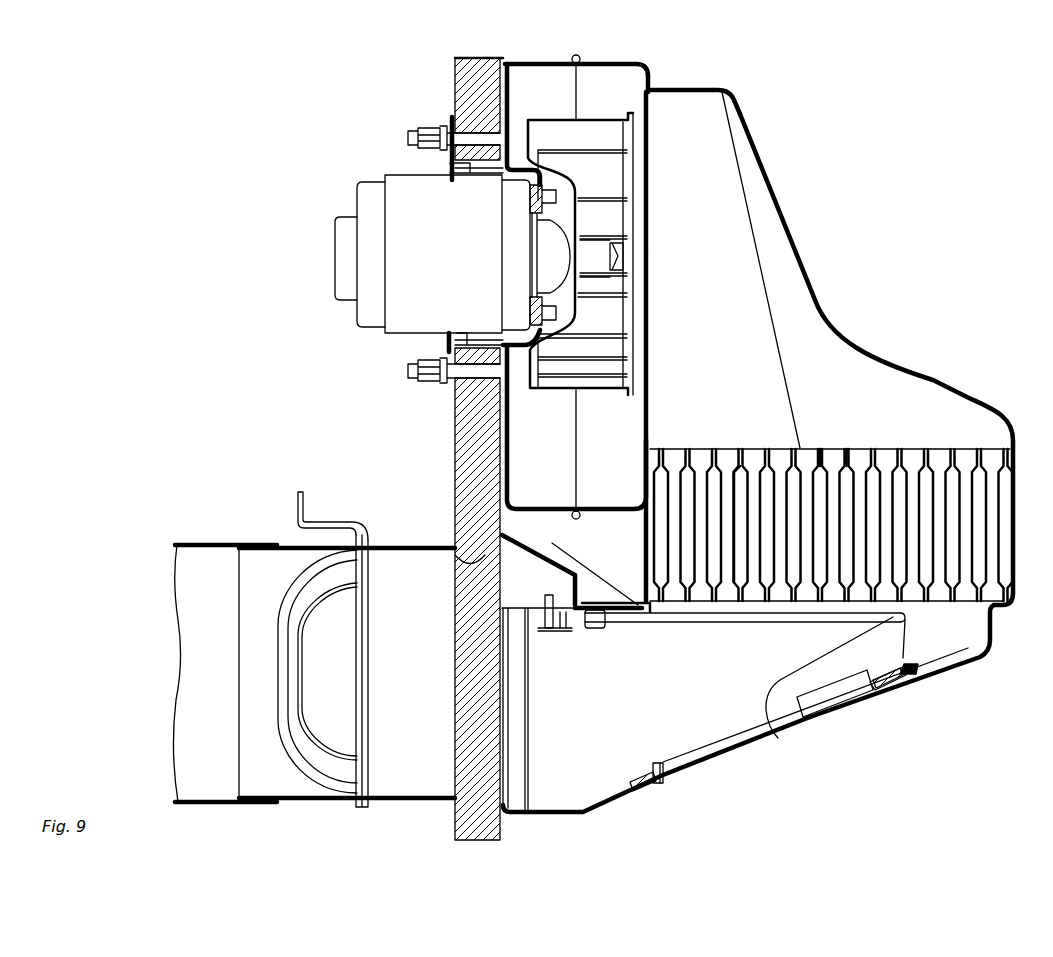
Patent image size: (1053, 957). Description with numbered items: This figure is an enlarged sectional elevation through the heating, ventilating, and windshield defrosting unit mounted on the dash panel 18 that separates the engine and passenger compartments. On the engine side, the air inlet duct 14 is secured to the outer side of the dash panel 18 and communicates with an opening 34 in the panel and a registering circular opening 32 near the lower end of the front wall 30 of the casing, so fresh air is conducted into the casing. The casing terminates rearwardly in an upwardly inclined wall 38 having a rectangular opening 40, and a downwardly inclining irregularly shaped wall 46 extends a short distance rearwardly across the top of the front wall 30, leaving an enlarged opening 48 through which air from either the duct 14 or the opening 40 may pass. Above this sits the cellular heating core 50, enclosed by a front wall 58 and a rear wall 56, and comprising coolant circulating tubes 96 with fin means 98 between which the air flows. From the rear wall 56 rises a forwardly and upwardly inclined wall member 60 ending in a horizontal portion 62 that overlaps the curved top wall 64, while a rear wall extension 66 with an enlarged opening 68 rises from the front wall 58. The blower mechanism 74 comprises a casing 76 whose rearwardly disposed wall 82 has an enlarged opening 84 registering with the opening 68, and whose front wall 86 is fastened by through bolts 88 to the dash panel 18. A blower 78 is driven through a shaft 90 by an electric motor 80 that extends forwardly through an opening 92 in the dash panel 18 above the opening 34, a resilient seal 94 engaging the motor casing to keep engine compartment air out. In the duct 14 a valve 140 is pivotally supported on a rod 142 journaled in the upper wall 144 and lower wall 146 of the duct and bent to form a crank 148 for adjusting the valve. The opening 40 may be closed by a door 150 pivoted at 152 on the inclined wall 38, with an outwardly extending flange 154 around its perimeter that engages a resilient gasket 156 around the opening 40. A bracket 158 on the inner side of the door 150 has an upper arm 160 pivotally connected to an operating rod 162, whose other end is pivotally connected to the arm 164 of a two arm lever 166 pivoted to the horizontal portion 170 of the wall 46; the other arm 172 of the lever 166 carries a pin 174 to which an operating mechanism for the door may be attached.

The air inlet duct 14 is at (215, 545).
The dash panel 18 is at (455, 437).
The front wall 30 is at (508, 800).
The circular opening 32 is at (510, 712).
The opening 34 is at (460, 558).
The upwardly inclined wall 38 is at (992, 655).
The rectangular opening 40 is at (660, 783).
The downwardly inclining irregularly shaped wall 46 is at (560, 555).
The enlarged opening 48 is at (700, 622).
The heating core 50 is at (702, 449).
The rear wall 56 is at (1017, 500).
The front wall 58 is at (650, 520).
The wall member 60 is at (808, 276).
The horizontal portion 62 is at (720, 86).
The curved top wall 64 is at (686, 88).
The rear wall extension 66 is at (650, 405).
The enlarged opening 68 is at (650, 280).
The blower mechanism 74 is at (507, 62).
The casing 76 is at (585, 63).
The blower 78 is at (598, 118).
The electric motor 80 is at (372, 325).
The rearwardly disposed wall 82 is at (650, 80).
The enlarged opening 84 is at (650, 165).
The front wall 86 is at (516, 103).
The through bolts 88 is at (408, 138).
The shaft 90 is at (552, 240).
The opening 92 is at (480, 165).
The resilient seal 94 is at (458, 340).
The coolant circulating tubes 96 is at (745, 470).
The fin means 98 is at (852, 455).
The valve 140 is at (297, 612).
The rod 142 is at (363, 538).
The upper wall 144 is at (400, 548).
The lower wall 146 is at (415, 800).
The crank 148 is at (325, 520).
The door 150 is at (720, 758).
The pivot 152 is at (915, 668).
The outwardly extending flange 154 is at (655, 765).
The resilient gasket 156 is at (635, 778).
The bracket 158 is at (780, 684).
The upper arm 160 is at (915, 618).
The operating rod 162 is at (750, 623).
The arm 164 is at (595, 630).
The two arm lever 166 is at (570, 632).
The horizontal portion 170 is at (642, 615).
The arm 172 is at (548, 631).
The pin 174 is at (545, 598).